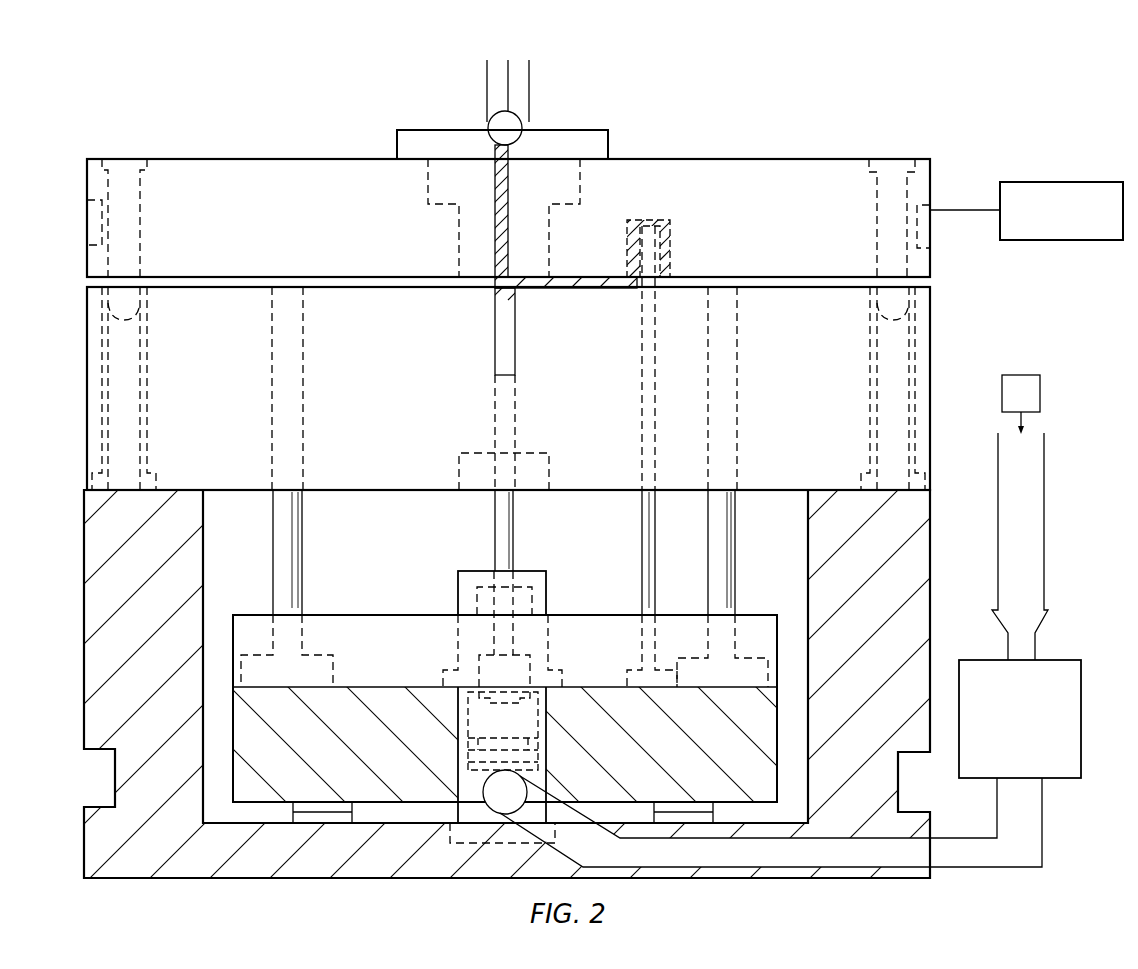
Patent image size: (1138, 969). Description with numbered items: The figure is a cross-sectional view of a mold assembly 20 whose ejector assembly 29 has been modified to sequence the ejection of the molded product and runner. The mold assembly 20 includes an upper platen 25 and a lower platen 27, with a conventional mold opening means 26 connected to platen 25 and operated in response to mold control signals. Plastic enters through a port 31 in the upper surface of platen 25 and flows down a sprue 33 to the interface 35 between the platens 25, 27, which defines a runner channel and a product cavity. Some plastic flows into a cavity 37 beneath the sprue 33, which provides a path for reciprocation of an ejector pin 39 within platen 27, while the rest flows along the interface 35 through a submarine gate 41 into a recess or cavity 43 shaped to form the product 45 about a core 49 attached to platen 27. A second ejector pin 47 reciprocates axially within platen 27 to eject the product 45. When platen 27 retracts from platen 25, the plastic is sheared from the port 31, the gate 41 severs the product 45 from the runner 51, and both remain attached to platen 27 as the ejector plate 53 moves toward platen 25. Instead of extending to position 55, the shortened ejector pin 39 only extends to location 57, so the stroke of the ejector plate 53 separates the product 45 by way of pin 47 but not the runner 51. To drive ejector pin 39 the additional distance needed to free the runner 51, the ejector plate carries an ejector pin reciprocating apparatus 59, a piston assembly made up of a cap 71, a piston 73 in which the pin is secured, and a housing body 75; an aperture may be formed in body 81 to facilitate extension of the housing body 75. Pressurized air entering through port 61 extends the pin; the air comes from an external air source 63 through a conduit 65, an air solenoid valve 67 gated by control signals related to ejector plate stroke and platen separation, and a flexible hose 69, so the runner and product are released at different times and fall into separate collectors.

The mold assembly 20 is at (1083, 362).
The platen 25 is at (933, 194).
The mold opening means 26 is at (1055, 182).
The platen 27 is at (933, 367).
The ejector assembly 29 is at (932, 530).
The port 31 is at (493, 122).
The sprue 33 is at (486, 187).
The interface 35 is at (936, 282).
The cavity 37 is at (496, 315).
The ejector pin 39 is at (514, 403).
The gate 41 is at (626, 277).
The recess or cavity 43 is at (666, 240).
The product 45 is at (666, 252).
The second ejector pin 47 is at (643, 402).
The core 49 is at (641, 289).
The runner 51 is at (551, 295).
The ejector plate 53 is at (585, 680).
The position 55 is at (486, 333).
The location 57 is at (486, 375).
The ejector pin reciprocating apparatus 59 is at (451, 750).
The port 61 is at (483, 788).
The air source 63 is at (1009, 404).
The conduit 65 is at (1045, 472).
The air solenoid valve 67 is at (1033, 759).
The flexible hose 69 is at (860, 840).
The cap 71 is at (547, 584).
The piston 73 is at (468, 718).
The housing body 75 is at (548, 752).
The body 81 is at (408, 826).